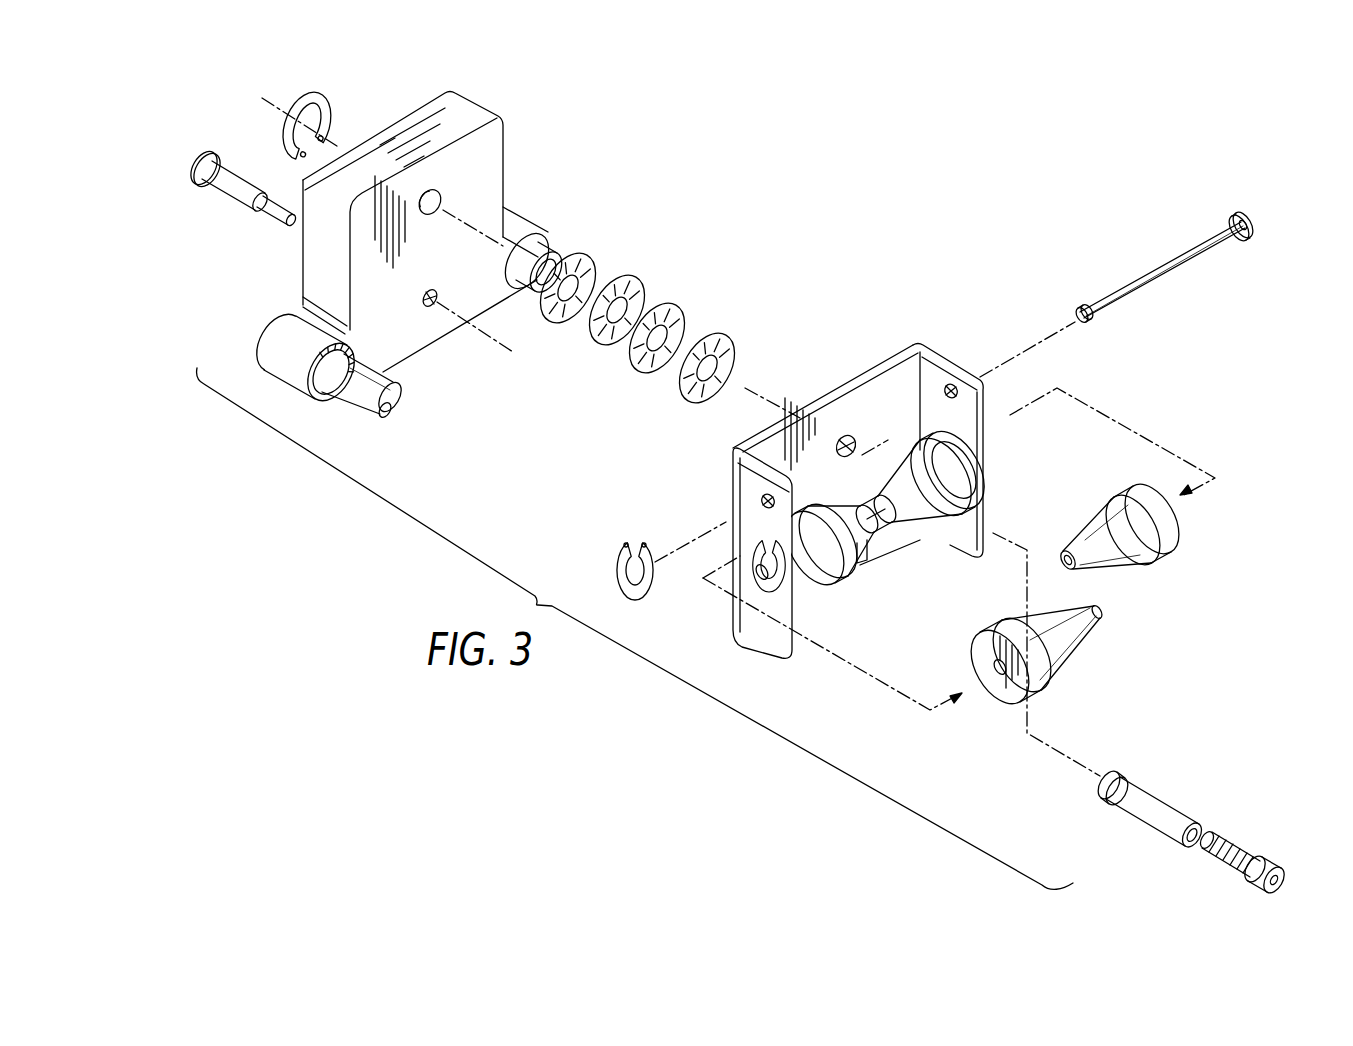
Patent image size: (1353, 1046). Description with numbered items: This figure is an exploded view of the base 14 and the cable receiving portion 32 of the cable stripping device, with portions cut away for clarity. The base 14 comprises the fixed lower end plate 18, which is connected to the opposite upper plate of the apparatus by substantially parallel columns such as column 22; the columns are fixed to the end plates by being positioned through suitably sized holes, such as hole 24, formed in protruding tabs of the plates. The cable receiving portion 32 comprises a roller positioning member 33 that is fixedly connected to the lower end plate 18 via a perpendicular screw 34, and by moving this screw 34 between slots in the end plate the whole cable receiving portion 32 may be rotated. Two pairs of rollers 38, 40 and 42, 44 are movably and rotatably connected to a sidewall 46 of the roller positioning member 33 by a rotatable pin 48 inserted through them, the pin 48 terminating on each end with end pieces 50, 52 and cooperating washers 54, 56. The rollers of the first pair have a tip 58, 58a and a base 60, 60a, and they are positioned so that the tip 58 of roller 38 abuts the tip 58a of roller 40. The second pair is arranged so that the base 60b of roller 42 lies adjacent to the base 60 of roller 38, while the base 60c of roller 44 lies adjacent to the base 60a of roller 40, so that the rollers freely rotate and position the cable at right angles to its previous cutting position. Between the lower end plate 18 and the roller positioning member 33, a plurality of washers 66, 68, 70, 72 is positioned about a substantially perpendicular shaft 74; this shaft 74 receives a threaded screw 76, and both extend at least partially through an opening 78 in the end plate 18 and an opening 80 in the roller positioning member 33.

The base 14 is at (385, 116).
The lower end plate 18 is at (485, 107).
The column 22 is at (377, 415).
The hole 24 is at (550, 238).
The cable receiving portion 32 is at (1189, 419).
The roller positioning member 33 is at (925, 344).
The perpendicular screw 34 is at (252, 170).
The roller 38 is at (1052, 689).
The roller 40 is at (1137, 537).
The roller 42 is at (800, 598).
The roller 44 is at (955, 545).
The sidewall 46 is at (985, 448).
The rotatable pin 48 is at (1128, 292).
The end piece 50 is at (1243, 213).
The end piece 52 is at (1077, 308).
The washer 54 is at (1256, 238).
The washer 56 is at (650, 596).
The tip 58 is at (1103, 622).
The tip 58a is at (1058, 560).
The base 60 is at (1005, 708).
The base 60a is at (1180, 525).
The base 60b is at (806, 605).
The base 60c is at (984, 478).
The washer 66 is at (593, 262).
The washer 68 is at (637, 282).
The washer 70 is at (676, 312).
The washer 72 is at (720, 338).
The shaft 74 is at (1175, 802).
The threaded screw 76 is at (1250, 850).
The opening 78 is at (442, 200).
The opening 80 is at (858, 443).